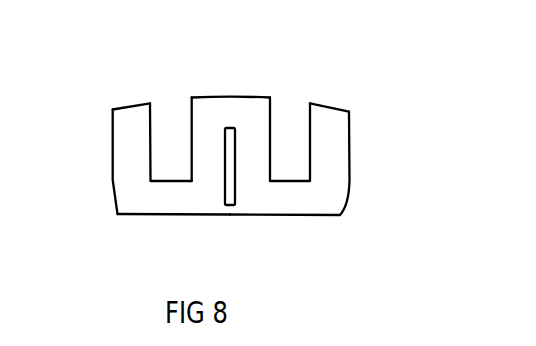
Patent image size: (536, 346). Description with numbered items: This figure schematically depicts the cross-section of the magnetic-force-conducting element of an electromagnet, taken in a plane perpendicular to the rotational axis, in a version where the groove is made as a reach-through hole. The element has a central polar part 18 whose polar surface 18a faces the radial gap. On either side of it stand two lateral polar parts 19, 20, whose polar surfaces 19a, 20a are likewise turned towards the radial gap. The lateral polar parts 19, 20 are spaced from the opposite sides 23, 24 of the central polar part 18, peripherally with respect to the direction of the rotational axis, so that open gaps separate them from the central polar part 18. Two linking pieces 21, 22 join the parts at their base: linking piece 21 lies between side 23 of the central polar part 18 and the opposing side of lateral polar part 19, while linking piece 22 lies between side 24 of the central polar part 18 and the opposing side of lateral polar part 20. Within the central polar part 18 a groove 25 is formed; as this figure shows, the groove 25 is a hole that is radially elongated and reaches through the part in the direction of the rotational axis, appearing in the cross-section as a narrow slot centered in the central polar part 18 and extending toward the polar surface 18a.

The central polar part 18 is at (243, 115).
The polar surface 18a is at (225, 97).
The lateral polar part 19 is at (137, 152).
The polar surface 19a is at (133, 103).
The lateral polar part 20 is at (330, 170).
The polar surface 20a is at (330, 105).
The linking piece 21 is at (167, 206).
The linking piece 22 is at (293, 202).
The side 23 is at (192, 138).
The side 24 is at (269, 142).
The groove 25 is at (228, 188).